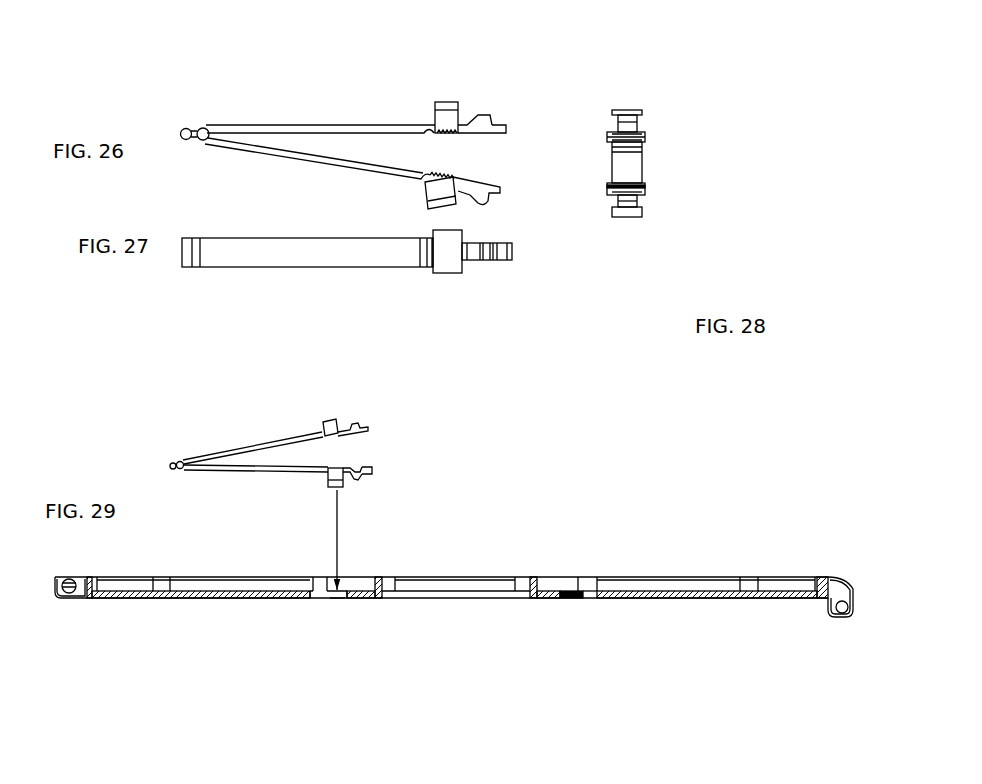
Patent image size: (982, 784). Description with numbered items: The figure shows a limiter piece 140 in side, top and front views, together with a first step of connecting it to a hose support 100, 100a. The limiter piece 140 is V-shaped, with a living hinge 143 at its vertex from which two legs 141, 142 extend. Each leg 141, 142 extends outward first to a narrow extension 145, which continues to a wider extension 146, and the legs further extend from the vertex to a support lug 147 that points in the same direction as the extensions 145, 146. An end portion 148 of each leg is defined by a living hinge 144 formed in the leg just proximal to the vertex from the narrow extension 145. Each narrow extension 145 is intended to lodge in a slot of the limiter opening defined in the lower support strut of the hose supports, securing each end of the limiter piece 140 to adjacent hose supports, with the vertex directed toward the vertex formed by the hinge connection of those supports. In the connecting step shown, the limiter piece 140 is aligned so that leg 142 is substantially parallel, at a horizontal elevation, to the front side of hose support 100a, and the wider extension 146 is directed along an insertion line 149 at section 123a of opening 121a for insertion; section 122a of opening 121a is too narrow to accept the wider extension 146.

In FIG. 29, the hose support 100 is at (454, 619).
In FIG. 29, the hose support 100a is at (204, 612).
In FIG. 29, the opening 121a is at (308, 583).
In FIG. 29, the section of opening 122a is at (312, 595).
In FIG. 29, the section of opening 123a is at (338, 598).
In FIG. 26, the limiter piece 140 is at (298, 110).
In FIG. 29, the limiter piece 140 is at (244, 428).
In FIG. 26, the leg 141 is at (350, 127).
In FIG. 27, the leg 141 is at (324, 261).
In FIG. 26, the leg 142 is at (290, 160).
In FIG. 28, the leg 142 is at (646, 157).
In FIG. 26, the living hinge 143 is at (197, 130).
In FIG. 27, the living hinge 143 is at (196, 268).
In FIG. 29, the living hinge 143 is at (187, 461).
In FIG. 26, the living hinge 144 is at (496, 155).
In FIG. 26, the narrow extension 145 is at (434, 111).
In FIG. 28, the narrow extension 145 is at (634, 123).
In FIG. 29, the narrow extension 145 is at (336, 472).
In FIG. 26, the wider extension 146 is at (447, 102).
In FIG. 27, the wider extension 146 is at (451, 266).
In FIG. 28, the wider extension 146 is at (624, 111).
In FIG. 29, the wider extension 146 is at (290, 440).
In FIG. 26, the support lug 147 is at (479, 117).
In FIG. 27, the support lug 147 is at (491, 256).
In FIG. 29, the support lug 147 is at (359, 468).
In FIG. 26, the end portion 148 is at (504, 125).
In FIG. 27, the end portion 148 is at (508, 249).
In FIG. 28, the end portion 148 is at (647, 138).
In FIG. 29, the end portion 148 is at (373, 467).
In FIG. 29, the insertion axis 149 is at (361, 540).